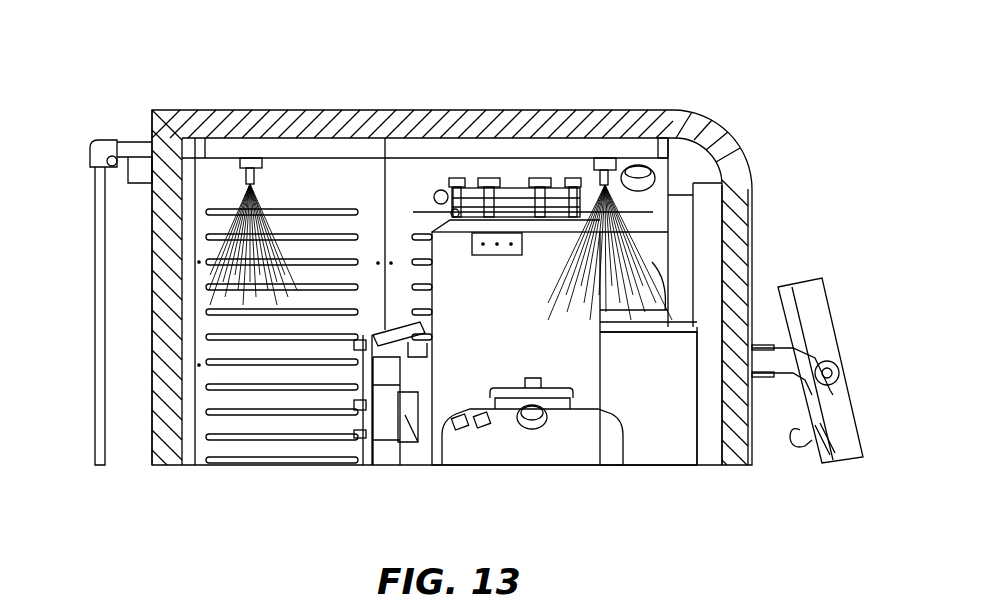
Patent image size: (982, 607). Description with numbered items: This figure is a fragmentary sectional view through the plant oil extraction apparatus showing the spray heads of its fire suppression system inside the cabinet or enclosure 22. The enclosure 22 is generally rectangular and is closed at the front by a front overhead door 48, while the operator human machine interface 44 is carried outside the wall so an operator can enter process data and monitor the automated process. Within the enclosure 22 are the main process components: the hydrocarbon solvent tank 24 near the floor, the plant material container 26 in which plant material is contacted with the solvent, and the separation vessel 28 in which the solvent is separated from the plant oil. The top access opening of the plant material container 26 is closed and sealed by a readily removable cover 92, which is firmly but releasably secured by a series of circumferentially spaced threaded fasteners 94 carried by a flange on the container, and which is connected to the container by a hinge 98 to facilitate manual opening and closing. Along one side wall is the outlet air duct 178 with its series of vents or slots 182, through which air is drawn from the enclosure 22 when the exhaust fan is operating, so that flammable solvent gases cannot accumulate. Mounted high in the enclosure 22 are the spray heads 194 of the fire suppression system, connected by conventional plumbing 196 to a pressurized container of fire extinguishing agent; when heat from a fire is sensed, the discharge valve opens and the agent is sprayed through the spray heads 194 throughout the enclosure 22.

The enclosure 22 is at (648, 88).
The hydrocarbon solvent tank 24 is at (519, 455).
The plant material container 26 is at (598, 346).
The separation vessel 28 is at (655, 458).
The operator human machine interface 44 is at (838, 320).
The front overhead door 48 is at (757, 188).
The removable cover 92 is at (520, 190).
The threaded fasteners 94 is at (490, 182).
The hinge 98 is at (438, 192).
The outlet air duct 178 is at (287, 183).
The slots 182 is at (222, 462).
The spray heads 194 is at (237, 177).
The plumbing 196 is at (96, 279).